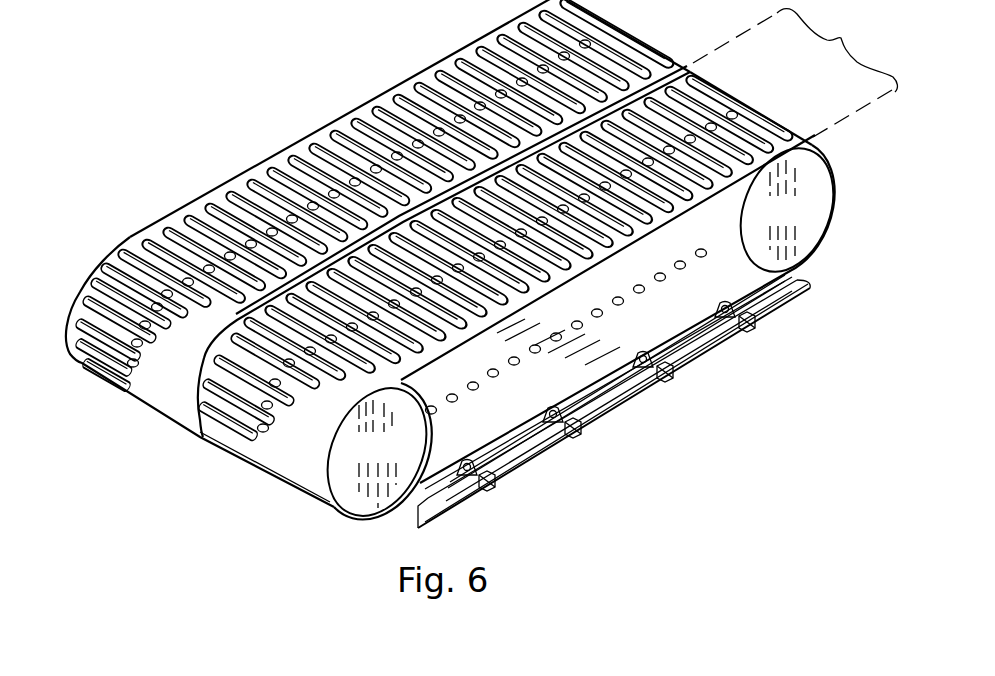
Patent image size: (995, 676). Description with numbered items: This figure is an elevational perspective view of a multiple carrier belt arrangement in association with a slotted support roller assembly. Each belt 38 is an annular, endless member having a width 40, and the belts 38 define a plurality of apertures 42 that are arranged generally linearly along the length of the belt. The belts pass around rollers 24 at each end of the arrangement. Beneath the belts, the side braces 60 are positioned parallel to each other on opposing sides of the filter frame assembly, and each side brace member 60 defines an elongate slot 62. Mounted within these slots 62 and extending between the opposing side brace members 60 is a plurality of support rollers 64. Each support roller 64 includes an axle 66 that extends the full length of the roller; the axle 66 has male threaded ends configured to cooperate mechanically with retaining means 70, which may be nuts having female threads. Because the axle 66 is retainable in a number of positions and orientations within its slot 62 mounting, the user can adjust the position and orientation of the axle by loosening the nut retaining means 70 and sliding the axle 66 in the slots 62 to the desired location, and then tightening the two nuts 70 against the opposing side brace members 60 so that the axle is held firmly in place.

The roller 24 is at (386, 458).
The belt 38 is at (150, 403).
The width 40 is at (795, 73).
The apertures 42 is at (327, 196).
The side brace 60 is at (530, 466).
The elongate slot 62 is at (630, 410).
The support roller 64 is at (460, 462).
The axle 66 is at (433, 488).
The retaining means 70 is at (583, 435).